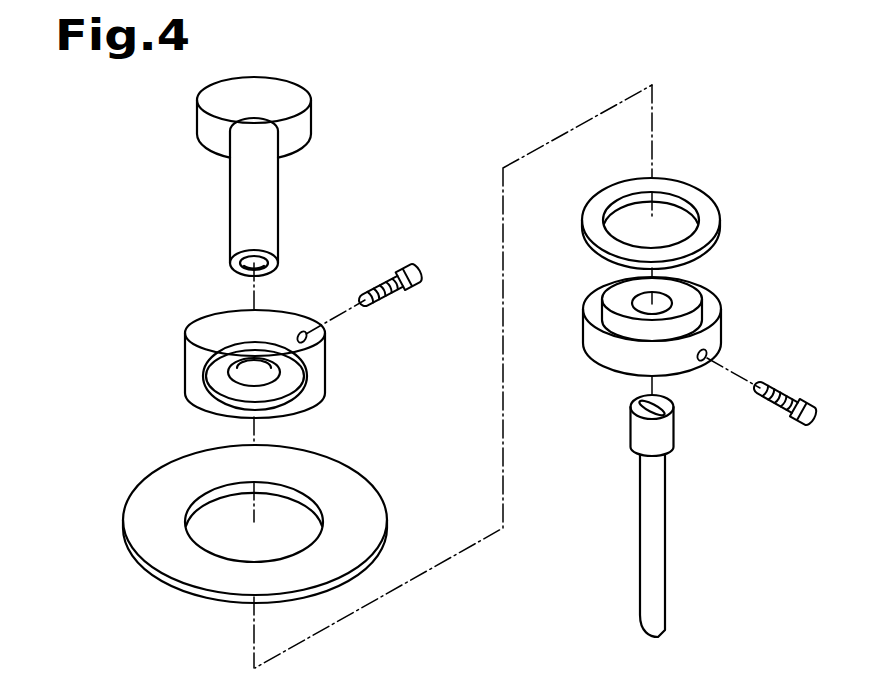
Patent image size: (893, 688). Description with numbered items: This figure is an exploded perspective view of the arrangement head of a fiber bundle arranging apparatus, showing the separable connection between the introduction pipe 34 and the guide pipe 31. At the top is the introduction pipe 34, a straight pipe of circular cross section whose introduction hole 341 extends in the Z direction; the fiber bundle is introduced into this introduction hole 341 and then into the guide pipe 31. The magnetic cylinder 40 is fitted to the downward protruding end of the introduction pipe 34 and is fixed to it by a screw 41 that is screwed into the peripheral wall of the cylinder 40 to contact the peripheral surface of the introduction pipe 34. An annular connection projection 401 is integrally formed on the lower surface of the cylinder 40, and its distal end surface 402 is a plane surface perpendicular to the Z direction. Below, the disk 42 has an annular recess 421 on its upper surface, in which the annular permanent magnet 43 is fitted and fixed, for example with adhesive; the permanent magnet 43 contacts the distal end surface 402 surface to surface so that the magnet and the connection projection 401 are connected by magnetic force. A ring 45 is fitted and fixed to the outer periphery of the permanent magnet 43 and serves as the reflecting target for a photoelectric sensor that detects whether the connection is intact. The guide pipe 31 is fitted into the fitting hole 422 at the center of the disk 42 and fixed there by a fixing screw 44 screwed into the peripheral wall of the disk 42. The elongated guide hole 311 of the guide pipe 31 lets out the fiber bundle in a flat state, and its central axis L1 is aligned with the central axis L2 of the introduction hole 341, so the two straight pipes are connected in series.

The guide pipe 31 is at (685, 516).
The guide hole 311 is at (662, 410).
The introduction pipe 34 is at (272, 181).
The introduction hole 341 is at (268, 264).
The magnetic cylinder 40 is at (305, 359).
The connection projection 401 is at (338, 377).
The distal end surface 402 is at (313, 390).
The screw 41 is at (418, 270).
The disk 42 is at (691, 330).
The annular recess 421 is at (713, 313).
The fitting hole 422 is at (665, 306).
The annular permanent magnet 43 is at (710, 208).
The fixing screw 44 is at (817, 423).
The ring 45 is at (142, 496).
The central axis of the guide hole L1 is at (650, 390).
The central axis of the introduction hole L2 is at (254, 290).